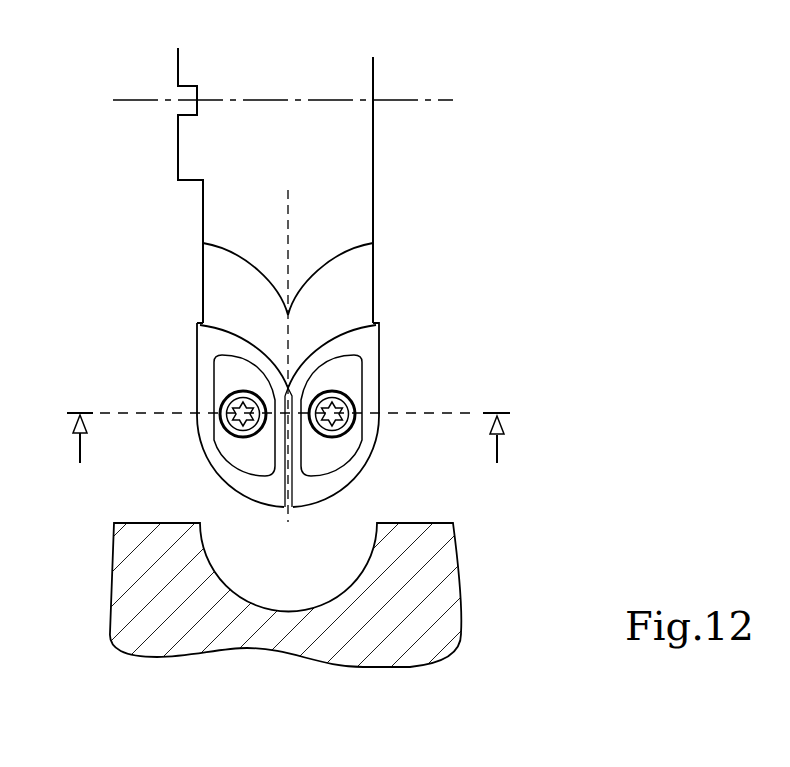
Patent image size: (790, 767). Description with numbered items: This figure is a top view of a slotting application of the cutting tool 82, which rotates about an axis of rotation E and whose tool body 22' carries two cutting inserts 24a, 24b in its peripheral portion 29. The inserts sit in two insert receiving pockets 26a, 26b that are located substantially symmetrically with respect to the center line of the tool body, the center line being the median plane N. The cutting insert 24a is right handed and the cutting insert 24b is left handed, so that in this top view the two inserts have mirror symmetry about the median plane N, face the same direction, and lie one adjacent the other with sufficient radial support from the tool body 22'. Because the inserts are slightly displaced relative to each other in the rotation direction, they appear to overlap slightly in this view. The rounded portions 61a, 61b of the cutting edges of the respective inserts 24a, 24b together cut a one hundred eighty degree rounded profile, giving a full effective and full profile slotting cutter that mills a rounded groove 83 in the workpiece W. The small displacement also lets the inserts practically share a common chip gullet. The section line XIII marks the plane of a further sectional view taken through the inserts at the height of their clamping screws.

The axis of rotation E is at (142, 100).
The median plane N is at (288, 213).
The tool body 22' is at (318, 185).
The insert receiving pocket 26a is at (343, 310).
The insert receiving pocket 26b is at (230, 310).
The cutting tool 82 is at (417, 305).
The cutting insert 24a is at (353, 383).
The cutting insert 24b is at (223, 385).
The rounded portion 61a is at (357, 475).
The rounded portion 61b is at (222, 477).
The section line XIII- XIII is at (73, 460).
The workpiece W is at (153, 593).
The peripheral portion 29 is at (288, 523).
The rounded groove 83 is at (345, 577).